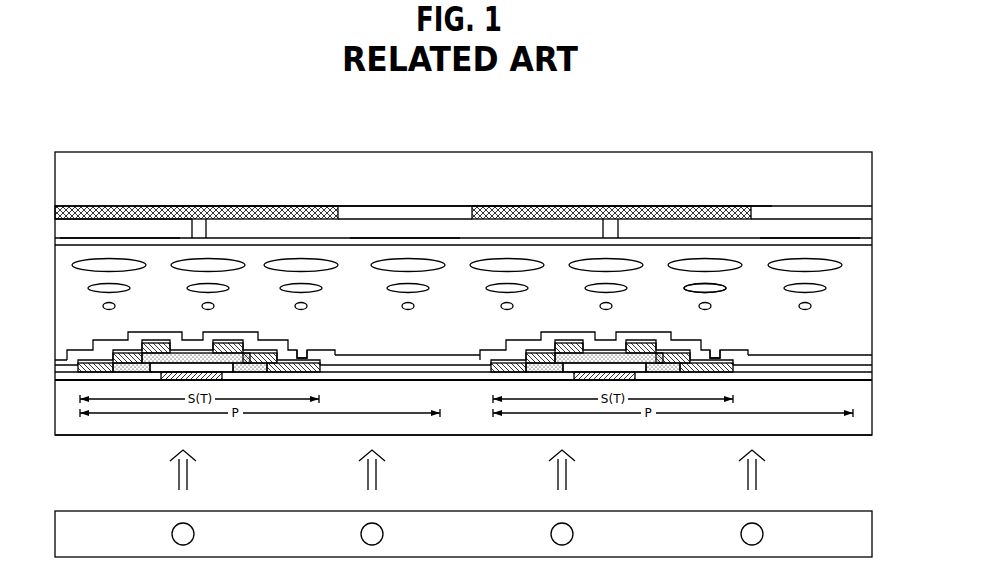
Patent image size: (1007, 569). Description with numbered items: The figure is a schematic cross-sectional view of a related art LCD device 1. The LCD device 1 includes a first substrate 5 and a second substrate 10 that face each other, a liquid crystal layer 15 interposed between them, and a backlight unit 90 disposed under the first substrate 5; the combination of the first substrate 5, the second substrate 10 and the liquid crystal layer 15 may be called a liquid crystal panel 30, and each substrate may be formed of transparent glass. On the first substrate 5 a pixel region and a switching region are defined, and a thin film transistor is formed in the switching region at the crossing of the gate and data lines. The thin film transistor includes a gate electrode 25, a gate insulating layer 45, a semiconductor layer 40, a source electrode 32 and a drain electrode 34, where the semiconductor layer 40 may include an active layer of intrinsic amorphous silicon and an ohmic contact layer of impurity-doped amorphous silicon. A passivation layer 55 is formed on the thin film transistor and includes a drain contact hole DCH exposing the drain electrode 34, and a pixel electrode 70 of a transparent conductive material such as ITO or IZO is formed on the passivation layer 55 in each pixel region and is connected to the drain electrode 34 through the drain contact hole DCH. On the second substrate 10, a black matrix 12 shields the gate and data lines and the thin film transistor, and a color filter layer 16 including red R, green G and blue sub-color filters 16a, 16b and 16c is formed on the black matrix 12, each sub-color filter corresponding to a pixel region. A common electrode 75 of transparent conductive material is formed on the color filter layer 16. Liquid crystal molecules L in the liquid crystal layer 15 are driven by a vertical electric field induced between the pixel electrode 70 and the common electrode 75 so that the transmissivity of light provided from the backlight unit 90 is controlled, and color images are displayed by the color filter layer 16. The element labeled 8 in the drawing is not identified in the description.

The LCD device 1 is at (828, 121).
The first substrate 5 is at (873, 355).
The color filter 8 is at (810, 228).
The second substrate 10 is at (845, 175).
The black matrix 12 is at (283, 207).
The liquid crystal layer 15 is at (873, 245).
The color filter layer 16 is at (405, 113).
The red sub-color filter 16a is at (150, 228).
The green sub-color filter 16b is at (425, 222).
The blue sub-color filter 16c is at (772, 218).
The gate electrode 25 is at (398, 403).
The liquid crystal panel 30 is at (911, 435).
The source electrode 32 is at (330, 336).
The drain electrode 34 is at (473, 336).
The semiconductor layer 40 is at (396, 341).
The gate insulating layer 45 is at (463, 346).
The passivation layer 55 is at (463, 338).
The pixel electrode 70 is at (463, 336).
The common electrode 75 is at (464, 246).
The backlight unit 90 is at (866, 530).
The drain contact hole DCH is at (518, 332).
The liquid crystal molecules L is at (726, 289).
The red R is at (120, 230).
The green G is at (405, 229).